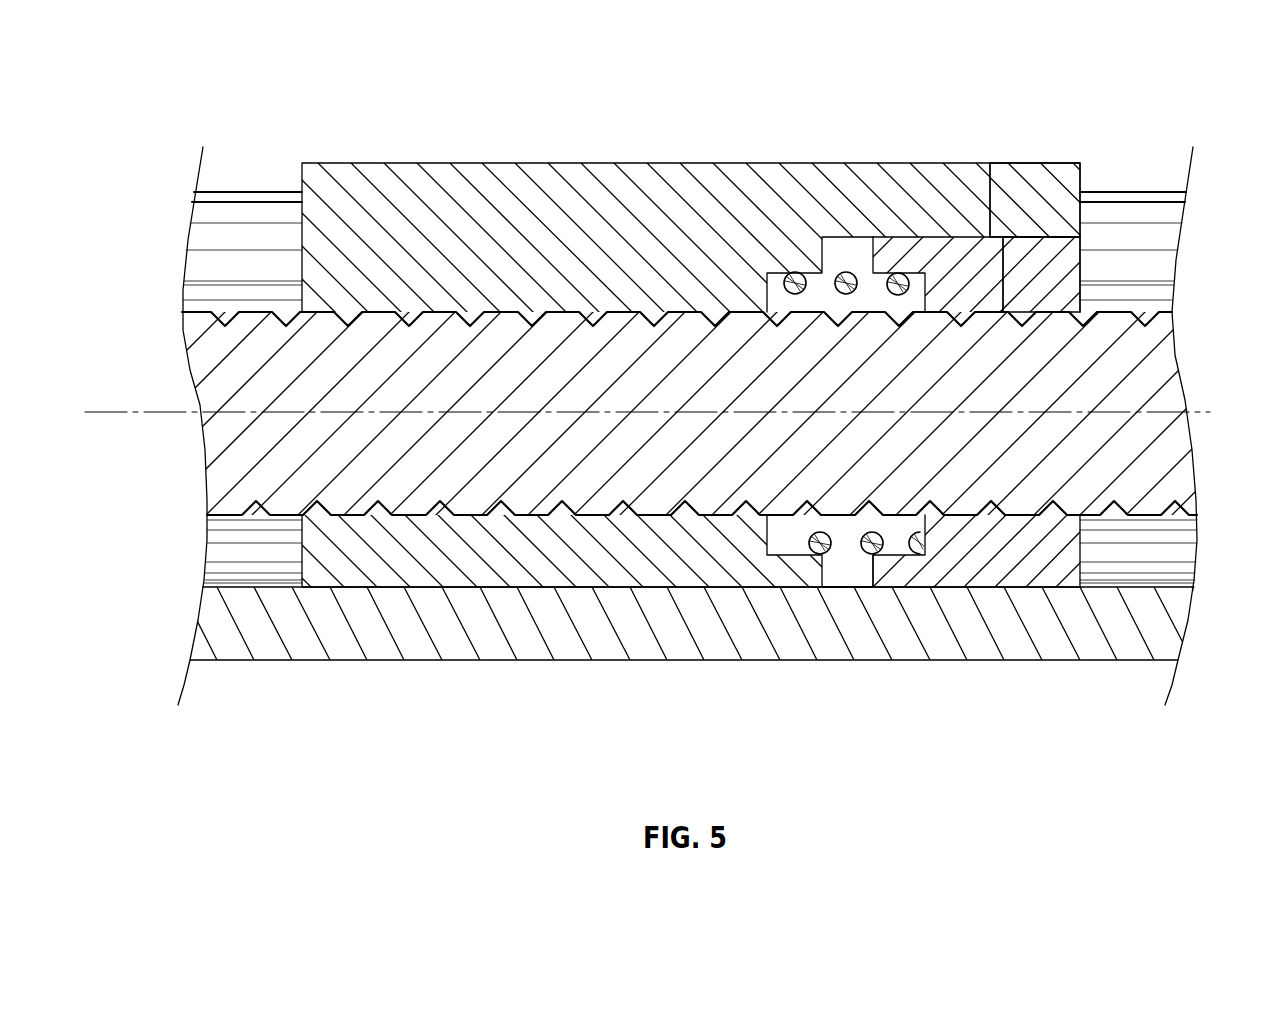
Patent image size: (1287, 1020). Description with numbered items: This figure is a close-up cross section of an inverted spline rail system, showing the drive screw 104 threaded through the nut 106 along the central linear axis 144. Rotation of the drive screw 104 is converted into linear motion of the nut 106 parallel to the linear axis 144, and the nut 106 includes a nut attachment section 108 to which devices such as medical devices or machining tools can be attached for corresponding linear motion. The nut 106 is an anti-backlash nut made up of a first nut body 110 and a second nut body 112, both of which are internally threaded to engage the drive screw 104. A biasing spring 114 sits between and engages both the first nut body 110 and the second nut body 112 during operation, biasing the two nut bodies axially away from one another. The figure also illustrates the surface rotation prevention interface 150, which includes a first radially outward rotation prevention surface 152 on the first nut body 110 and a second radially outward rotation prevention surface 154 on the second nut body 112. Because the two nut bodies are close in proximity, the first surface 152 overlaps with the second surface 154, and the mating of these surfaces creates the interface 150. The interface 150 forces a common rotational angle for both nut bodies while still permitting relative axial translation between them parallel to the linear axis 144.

The drive screw 104 is at (1177, 393).
The nut 106 is at (478, 131).
The nut attachment section 108 is at (957, 163).
The first nut body 110 is at (1029, 168).
The second nut body 112 is at (1063, 277).
The biasing spring 114 is at (843, 271).
The linear axis 144 is at (92, 412).
The surface rotation prevention interface 150 is at (919, 236).
The first radially outward rotation prevention surface 152 is at (990, 163).
The second radially outward rotation prevention surface 154 is at (1003, 237).